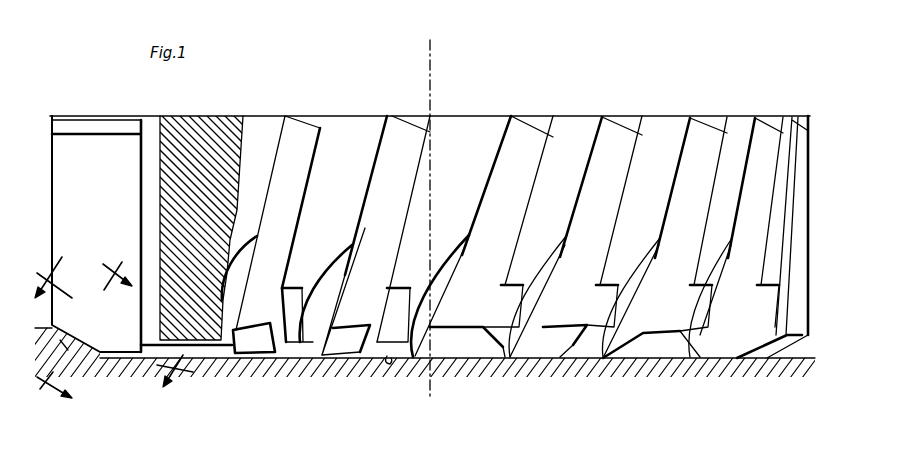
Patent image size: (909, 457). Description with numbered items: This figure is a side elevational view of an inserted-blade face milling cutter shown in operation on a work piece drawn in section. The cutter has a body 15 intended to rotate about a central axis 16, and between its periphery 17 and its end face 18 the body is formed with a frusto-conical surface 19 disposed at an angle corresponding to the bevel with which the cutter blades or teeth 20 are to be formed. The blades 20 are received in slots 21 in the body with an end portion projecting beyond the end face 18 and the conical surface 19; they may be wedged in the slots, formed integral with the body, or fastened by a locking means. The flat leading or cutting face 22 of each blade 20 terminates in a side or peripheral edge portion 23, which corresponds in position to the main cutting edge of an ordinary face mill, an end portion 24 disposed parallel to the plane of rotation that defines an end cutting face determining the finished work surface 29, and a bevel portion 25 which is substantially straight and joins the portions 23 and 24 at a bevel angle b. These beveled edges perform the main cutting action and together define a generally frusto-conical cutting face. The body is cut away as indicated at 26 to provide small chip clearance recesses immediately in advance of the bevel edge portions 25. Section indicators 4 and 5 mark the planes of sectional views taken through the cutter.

The body 15 is at (486, 115).
The central axis 16 is at (429, 50).
The periphery 17 is at (362, 133).
The end face 18 is at (307, 352).
The frusto-conical surface 19 is at (290, 305).
The cutter blades or teeth 20 is at (500, 156).
The slots 21 is at (422, 117).
The leading or cutting face 22 is at (338, 305).
The side or peripheral edge portion 23 is at (52, 230).
The end portion 24 is at (126, 358).
The bevel portion 25 is at (85, 348).
The chip clearance recesses 26 is at (336, 250).
The finished work surface 29 is at (388, 365).
The section line 4- 4 is at (84, 341).
The section line 5- 5 is at (113, 328).
The bevel angle b is at (70, 359).